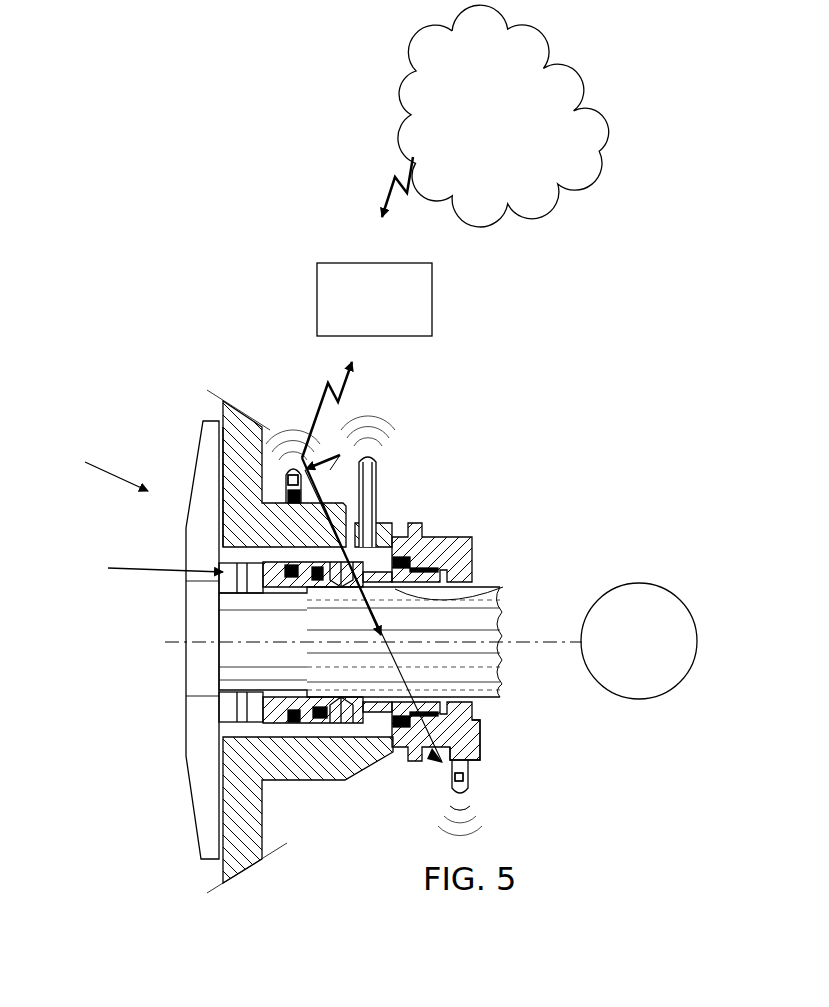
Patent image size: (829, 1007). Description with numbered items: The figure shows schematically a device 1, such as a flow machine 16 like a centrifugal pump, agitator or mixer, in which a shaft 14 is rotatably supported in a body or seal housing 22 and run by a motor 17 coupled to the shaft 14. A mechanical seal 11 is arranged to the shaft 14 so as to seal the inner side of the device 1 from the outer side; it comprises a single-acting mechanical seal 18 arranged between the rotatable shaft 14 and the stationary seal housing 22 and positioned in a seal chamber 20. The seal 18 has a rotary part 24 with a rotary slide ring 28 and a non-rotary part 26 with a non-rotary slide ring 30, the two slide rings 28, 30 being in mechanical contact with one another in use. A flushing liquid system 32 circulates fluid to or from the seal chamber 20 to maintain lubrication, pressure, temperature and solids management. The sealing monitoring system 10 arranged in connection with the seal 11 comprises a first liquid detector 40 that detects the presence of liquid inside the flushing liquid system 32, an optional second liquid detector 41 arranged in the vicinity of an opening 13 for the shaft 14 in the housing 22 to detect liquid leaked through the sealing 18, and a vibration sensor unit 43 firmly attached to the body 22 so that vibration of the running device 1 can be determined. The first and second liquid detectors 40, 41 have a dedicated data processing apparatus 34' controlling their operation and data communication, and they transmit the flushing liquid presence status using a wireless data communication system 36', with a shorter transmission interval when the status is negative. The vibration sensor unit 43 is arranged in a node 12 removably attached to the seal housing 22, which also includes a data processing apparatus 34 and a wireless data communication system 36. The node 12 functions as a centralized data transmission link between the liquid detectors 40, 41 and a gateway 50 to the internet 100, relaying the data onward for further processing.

The device 1 is at (107, 464).
The sealing monitoring system 10 is at (257, 404).
The mechanical seal 11 is at (145, 564).
The node 12 is at (332, 468).
The opening 13 is at (470, 766).
The shaft 14 is at (240, 650).
The flow machine 16 is at (197, 629).
The motor 17 is at (603, 650).
The single-acting mechanical seal 18 is at (357, 610).
The seal chamber 20 is at (312, 723).
The seal housing 22 is at (247, 470).
The rotary part 24 is at (240, 676).
The non-rotary part 26 is at (473, 537).
The rotary slide ring 28 is at (337, 608).
The non-rotary slide ring 30 is at (367, 633).
The flushing liquid system 32 is at (498, 590).
The data processing apparatus 34 is at (286, 431).
The dedicated data processing apparatus 34' is at (455, 633).
The wireless data communication system 36 is at (323, 494).
The wireless data communication system 36' is at (443, 626).
The first liquid detector 40 is at (418, 558).
The second liquid detector 41 is at (481, 726).
The vibration sensor unit 43 is at (305, 491).
The gateway 50 is at (387, 305).
The internet 100 is at (516, 128).